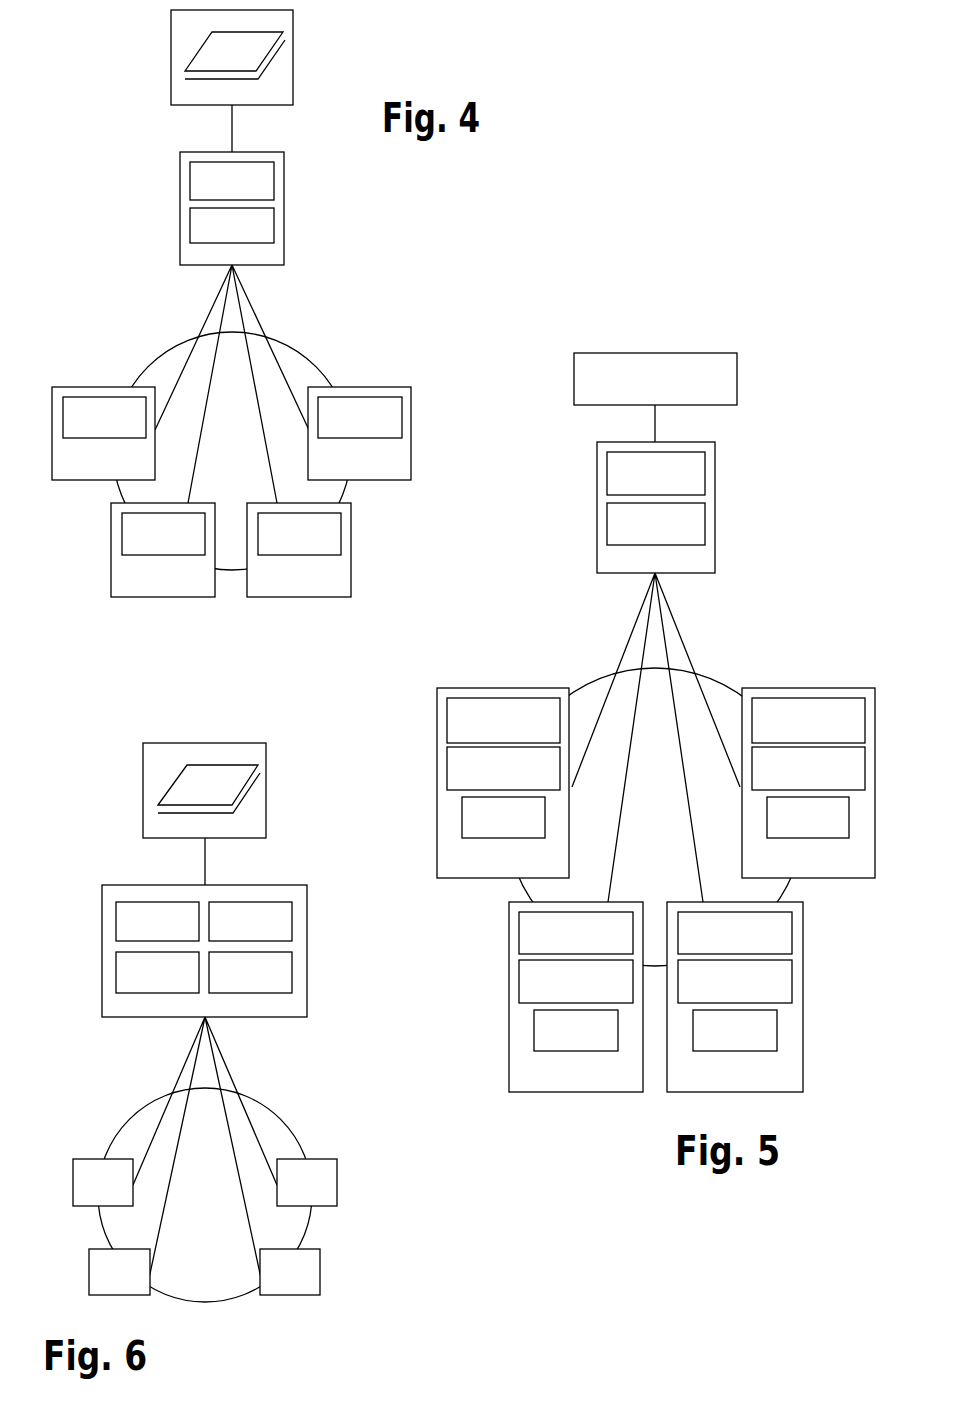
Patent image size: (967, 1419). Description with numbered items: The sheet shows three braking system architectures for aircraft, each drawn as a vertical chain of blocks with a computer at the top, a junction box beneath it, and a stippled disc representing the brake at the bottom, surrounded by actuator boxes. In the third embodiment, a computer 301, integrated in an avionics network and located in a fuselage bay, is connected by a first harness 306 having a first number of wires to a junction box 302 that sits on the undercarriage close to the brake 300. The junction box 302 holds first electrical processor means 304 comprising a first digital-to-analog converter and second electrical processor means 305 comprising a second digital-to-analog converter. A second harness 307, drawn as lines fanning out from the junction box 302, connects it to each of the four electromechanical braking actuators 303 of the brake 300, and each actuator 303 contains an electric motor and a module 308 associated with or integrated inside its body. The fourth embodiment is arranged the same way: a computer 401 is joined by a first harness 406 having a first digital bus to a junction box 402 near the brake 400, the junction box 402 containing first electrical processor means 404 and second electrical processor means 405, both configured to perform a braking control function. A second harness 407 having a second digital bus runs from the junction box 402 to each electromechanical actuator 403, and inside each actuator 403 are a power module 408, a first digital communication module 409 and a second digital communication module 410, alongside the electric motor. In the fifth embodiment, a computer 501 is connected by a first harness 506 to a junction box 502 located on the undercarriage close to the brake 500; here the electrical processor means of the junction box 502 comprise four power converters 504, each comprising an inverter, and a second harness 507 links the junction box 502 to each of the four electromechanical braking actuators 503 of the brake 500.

In FIG. 4, the brake 300 is at (318, 365).
In FIG. 4, the computer 301 is at (294, 70).
In FIG. 4, the junction box 302 is at (285, 223).
In FIG. 4, the electromechanical braking actuator 303 is at (412, 457).
In FIG. 4, the first electrical processor means 304 is at (202, 182).
In FIG. 4, the second electrical processor means 305 is at (200, 222).
In FIG. 4, the first harness 306 is at (231, 135).
In FIG. 4, the second harness 307 is at (163, 361).
In FIG. 4, the module 308 is at (83, 412).
In FIG. 5, the brake 400 is at (720, 684).
In FIG. 5, the computer 401 is at (738, 390).
In FIG. 5, the junction box 402 is at (716, 497).
In FIG. 5, the electromechanical braking actuator 403 is at (846, 688).
In FIG. 5, the first electrical processor means 404 is at (687, 475).
In FIG. 5, the second electrical processor means 405 is at (690, 522).
In FIG. 5, the first harness 406 is at (653, 425).
In FIG. 5, the second harness 407 is at (603, 700).
In FIG. 5, the power module 408 is at (478, 818).
In FIG. 5, the first digital communication module 409 is at (467, 769).
In FIG. 5, the second digital communication module 410 is at (463, 717).
In FIG. 6, the brake 500 is at (307, 1143).
In FIG. 6, the computer 501 is at (143, 795).
In FIG. 6, the junction box 502 is at (308, 939).
In FIG. 6, the electromechanical braking actuator 503 is at (73, 1190).
In FIG. 6, the power converter 504 is at (263, 917).
In FIG. 6, the first harness 506 is at (204, 867).
In FIG. 6, the second harness 507 is at (156, 1130).